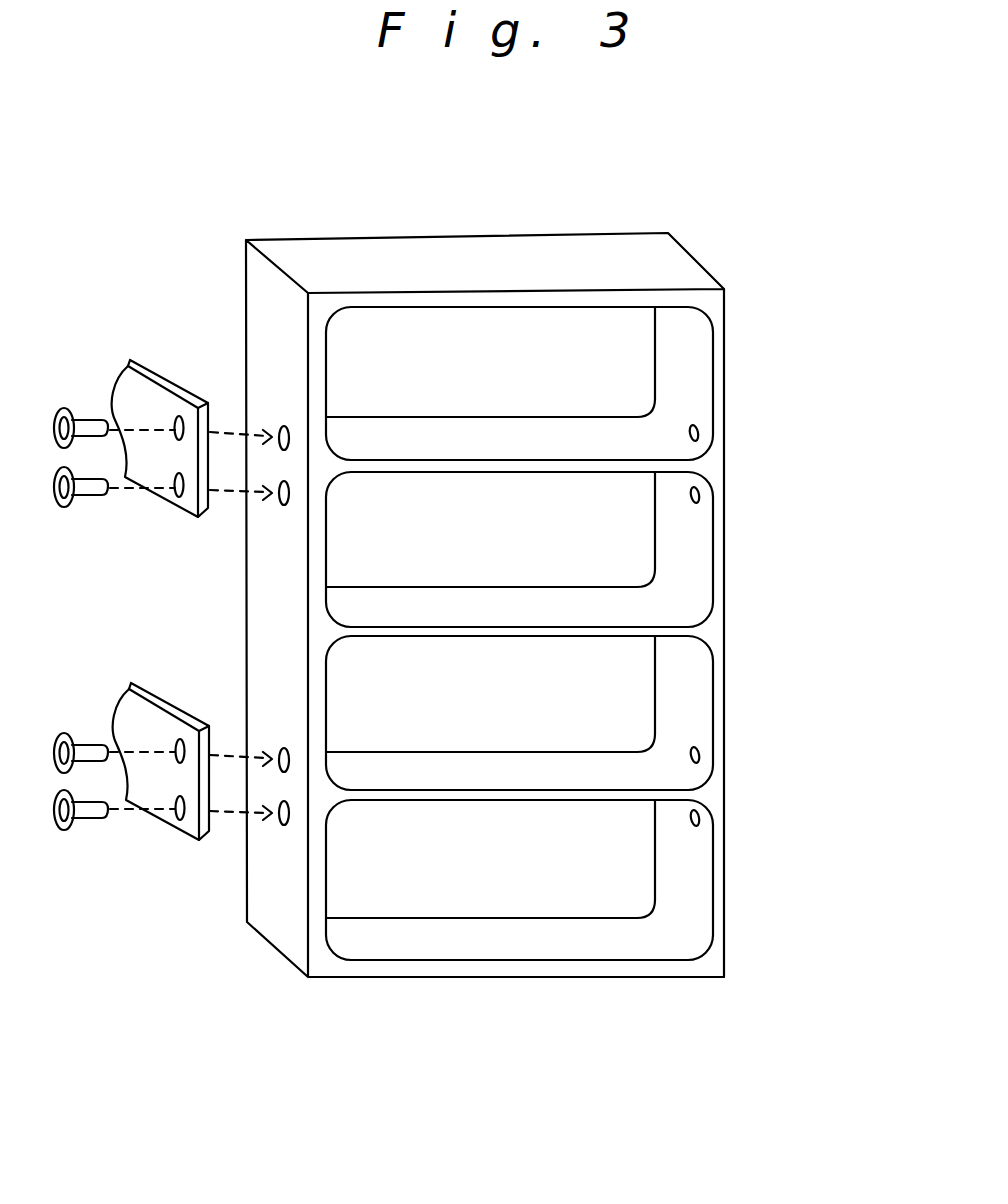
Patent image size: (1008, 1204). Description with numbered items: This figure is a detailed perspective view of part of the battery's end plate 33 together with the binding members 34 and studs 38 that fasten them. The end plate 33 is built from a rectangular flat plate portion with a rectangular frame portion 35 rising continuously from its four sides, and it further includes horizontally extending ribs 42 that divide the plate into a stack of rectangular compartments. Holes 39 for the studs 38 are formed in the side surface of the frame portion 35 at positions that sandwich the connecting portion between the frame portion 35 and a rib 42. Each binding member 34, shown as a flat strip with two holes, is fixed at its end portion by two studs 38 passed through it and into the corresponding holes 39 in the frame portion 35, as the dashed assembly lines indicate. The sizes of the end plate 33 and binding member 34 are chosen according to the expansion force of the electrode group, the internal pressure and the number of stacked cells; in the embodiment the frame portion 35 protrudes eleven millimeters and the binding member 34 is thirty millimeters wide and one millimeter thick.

The end plate 33 is at (693, 269).
The binding member 34 is at (157, 393).
The rectangular frame portion 35 is at (718, 382).
The stud 38 is at (90, 822).
The hole 39 is at (285, 825).
The rib 42 is at (617, 793).